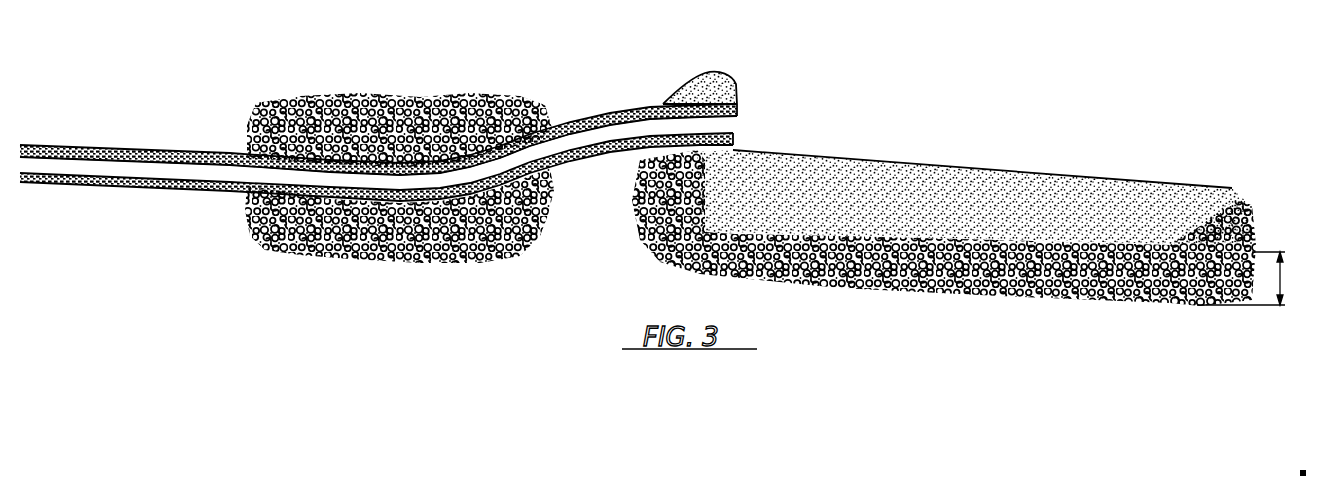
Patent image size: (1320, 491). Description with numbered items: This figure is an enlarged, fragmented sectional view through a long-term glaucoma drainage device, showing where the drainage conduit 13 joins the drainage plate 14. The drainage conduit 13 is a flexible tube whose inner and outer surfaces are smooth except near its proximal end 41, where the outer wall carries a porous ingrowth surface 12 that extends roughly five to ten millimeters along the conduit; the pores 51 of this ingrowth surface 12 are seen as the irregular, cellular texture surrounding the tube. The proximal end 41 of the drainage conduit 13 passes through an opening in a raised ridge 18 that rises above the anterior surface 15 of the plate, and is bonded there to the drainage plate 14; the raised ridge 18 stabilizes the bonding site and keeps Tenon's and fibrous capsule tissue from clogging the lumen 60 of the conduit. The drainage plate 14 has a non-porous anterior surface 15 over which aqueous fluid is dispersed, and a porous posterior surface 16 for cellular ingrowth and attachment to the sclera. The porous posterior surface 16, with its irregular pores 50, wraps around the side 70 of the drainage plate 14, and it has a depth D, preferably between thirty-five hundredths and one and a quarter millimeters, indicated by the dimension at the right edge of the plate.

The porous ingrowth surface 12 is at (367, 110).
The drainage conduit 13 is at (92, 183).
The drainage plate 14 is at (1135, 202).
The anterior surface 15 is at (1033, 168).
The porous posterior surface 16 is at (833, 260).
The raised ridge 18 is at (687, 80).
The proximal end 41 is at (737, 113).
The pores 50 is at (753, 260).
The pores 51 is at (283, 240).
The lumen 60 is at (633, 127).
The side 70 is at (713, 207).
The depth D is at (1283, 277).